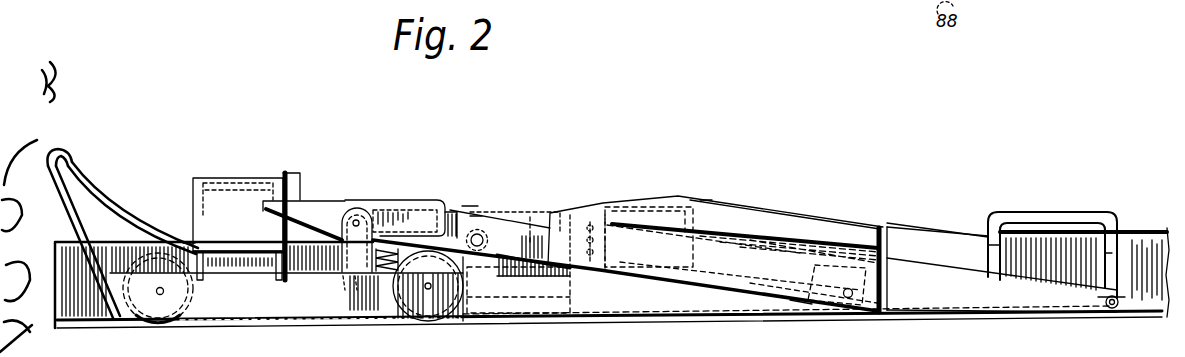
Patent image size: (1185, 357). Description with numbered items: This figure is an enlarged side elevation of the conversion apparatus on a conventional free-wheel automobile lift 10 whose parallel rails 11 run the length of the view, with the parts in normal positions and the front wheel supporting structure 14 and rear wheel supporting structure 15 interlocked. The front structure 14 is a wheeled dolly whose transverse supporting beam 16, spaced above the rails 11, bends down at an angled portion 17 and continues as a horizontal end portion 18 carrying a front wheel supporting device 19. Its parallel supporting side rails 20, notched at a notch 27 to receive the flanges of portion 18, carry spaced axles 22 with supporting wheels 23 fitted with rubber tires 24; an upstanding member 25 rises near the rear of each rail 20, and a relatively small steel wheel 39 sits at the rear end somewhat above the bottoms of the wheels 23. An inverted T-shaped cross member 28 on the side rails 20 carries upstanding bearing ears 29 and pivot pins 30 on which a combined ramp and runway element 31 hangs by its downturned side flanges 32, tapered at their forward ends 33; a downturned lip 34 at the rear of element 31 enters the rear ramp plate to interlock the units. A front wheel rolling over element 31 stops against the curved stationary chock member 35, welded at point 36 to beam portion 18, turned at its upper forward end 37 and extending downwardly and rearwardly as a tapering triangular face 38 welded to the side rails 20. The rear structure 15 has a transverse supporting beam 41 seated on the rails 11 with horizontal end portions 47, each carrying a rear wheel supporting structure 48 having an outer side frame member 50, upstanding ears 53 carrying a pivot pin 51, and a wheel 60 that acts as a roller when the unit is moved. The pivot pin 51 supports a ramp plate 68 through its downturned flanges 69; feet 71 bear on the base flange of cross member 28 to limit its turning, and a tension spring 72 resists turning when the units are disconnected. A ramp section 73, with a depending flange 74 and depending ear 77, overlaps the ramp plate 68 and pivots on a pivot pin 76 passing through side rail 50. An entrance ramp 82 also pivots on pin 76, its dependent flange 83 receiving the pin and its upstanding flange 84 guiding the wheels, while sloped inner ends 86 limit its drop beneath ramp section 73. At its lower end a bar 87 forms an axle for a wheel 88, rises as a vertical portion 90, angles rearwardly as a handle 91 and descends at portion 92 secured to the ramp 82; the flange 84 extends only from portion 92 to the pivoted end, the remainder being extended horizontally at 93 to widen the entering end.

The free-wheel automobile lift 10 is at (1143, 223).
The parallel rails 11 is at (1147, 297).
The front wheel supporting structure 14 is at (256, 166).
The rear wheel supporting structure 15 is at (852, 195).
The transverse supporting beam 16 is at (283, 178).
The downwardly angled beam portion 17 is at (211, 186).
The horizontal end portion 18 is at (232, 245).
The front wheel supporting device 19 is at (288, 176).
The supporting side rails 20 is at (300, 320).
The axles 22 is at (189, 285).
The supporting wheel 23 is at (159, 274).
The rubber tire 24 is at (192, 323).
The upstanding member 25 is at (537, 230).
The notch 27 is at (269, 280).
The inverted T-shaped cross member 28 is at (340, 277).
The upstanding bearing ears 29 is at (344, 210).
The pivot pins 30 is at (360, 219).
The combined ramp and runway element 31 is at (387, 201).
The downturned side flanges 32 is at (411, 212).
The tapered flange portion 33 is at (289, 212).
The downturned lip 34 is at (454, 210).
The curved stationary chock member 35 is at (119, 206).
The weld point 36 is at (190, 242).
The turned upper end of chock 37 is at (59, 149).
The downwardly and rearwardly extending chock portion 38 is at (75, 230).
The small wheel 39 is at (567, 292).
The transverse supporting beam 41 is at (705, 200).
The horizontal end portions 47 is at (653, 267).
The rear wheel supporting structure 48 is at (783, 204).
The outer side frame member 50 is at (706, 303).
The pivot pin 51 is at (483, 233).
The upstanding ears 53 is at (476, 278).
The wheel 60 is at (428, 300).
The ramp plate 68 is at (467, 206).
The downturned flanges 69 is at (477, 216).
The feet 71 is at (347, 291).
The tension spring 72 is at (572, 215).
The ramp section 73 is at (731, 241).
The depending flange 74 is at (748, 280).
The pivot pin 76 is at (846, 299).
The depending ear 77 is at (819, 267).
The entrance ramp 82 is at (947, 272).
The dependent flange 83 is at (932, 304).
The upstanding flange 84 is at (909, 236).
The sloped inner ends 86 is at (798, 306).
The horizontally extending bar 87 is at (1112, 309).
The wheel 88 is at (1106, 310).
The vertical portion 90 is at (1110, 253).
The handle 91 is at (1054, 216).
The downward handle portion 92 is at (993, 246).
The horizontally extended portion 93 is at (1048, 283).